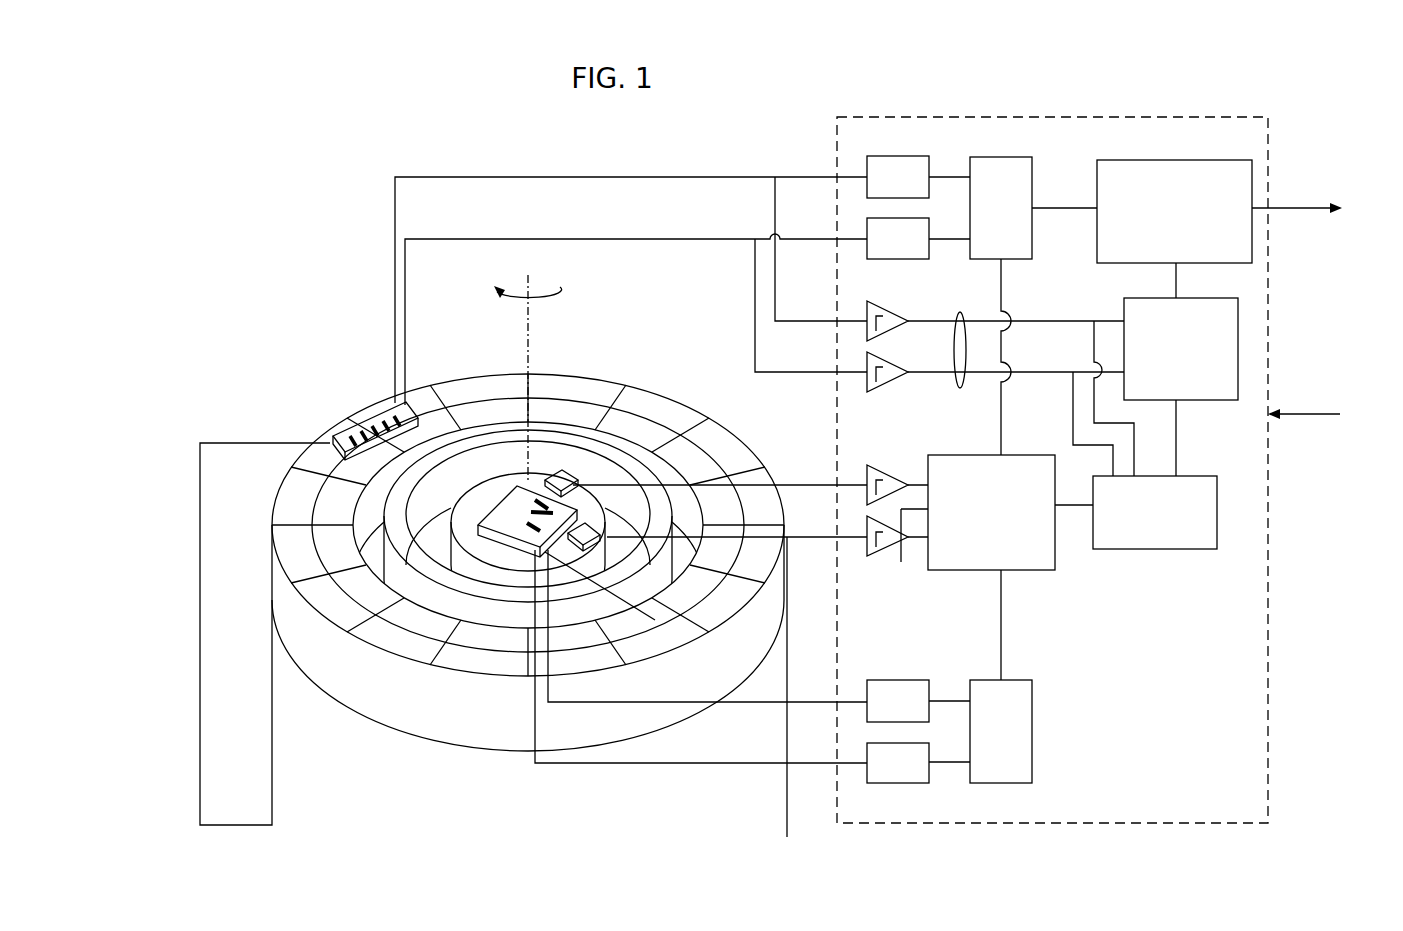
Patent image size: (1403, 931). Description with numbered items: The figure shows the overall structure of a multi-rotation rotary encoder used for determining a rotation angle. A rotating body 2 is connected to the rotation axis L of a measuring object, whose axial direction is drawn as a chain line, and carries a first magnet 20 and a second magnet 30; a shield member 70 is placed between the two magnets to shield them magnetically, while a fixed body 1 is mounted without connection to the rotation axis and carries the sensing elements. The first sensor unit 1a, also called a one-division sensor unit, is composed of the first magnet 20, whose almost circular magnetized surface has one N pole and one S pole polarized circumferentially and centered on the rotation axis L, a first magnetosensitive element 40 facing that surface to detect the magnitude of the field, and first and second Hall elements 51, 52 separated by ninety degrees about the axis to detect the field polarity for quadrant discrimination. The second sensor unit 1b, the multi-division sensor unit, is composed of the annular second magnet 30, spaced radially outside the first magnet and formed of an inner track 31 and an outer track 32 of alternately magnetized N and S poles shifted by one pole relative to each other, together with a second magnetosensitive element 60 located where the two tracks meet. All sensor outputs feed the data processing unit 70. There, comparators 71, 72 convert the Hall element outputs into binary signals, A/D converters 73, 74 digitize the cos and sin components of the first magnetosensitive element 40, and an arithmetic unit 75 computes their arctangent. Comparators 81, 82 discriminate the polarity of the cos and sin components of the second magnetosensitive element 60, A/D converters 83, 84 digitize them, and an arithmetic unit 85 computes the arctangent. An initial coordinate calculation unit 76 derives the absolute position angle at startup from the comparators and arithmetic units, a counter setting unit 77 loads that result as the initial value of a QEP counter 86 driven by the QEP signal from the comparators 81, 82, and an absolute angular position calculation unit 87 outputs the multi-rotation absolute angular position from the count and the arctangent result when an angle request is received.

The fixed body 1 is at (200, 680).
The first sensor unit 1a is at (490, 458).
The second sensor unit 1b is at (528, 474).
The rotating body 2 is at (787, 826).
The first magnet 20 is at (320, 607).
The second magnet 30 is at (352, 668).
The inner track 31 is at (656, 440).
The outer track 32 is at (737, 462).
The first magnetosensitive element 40 is at (540, 462).
The first Hall element 51 is at (565, 472).
The second Hall element 52 is at (600, 548).
The second magnetosensitive element 60 is at (326, 418).
The data processing unit 70 is at (462, 605).
The comparator 71 is at (880, 482).
The comparator 72 is at (880, 548).
The A/D converter 73 is at (912, 690).
The A/D converter 74 is at (916, 780).
The arithmetic unit 75 is at (1032, 702).
The initial coordinate calculation unit 76 is at (1057, 567).
The counter setting unit 77 is at (1172, 547).
The comparator 81 is at (872, 312).
The comparator 82 is at (872, 388).
The A/D converter 83 is at (915, 168).
The A/D converter 84 is at (916, 256).
The arithmetic unit 85 is at (1025, 258).
The QEP counter 86 is at (1200, 396).
The absolute angular position calculation unit 87 is at (1212, 255).
The rotation axis L is at (528, 369).